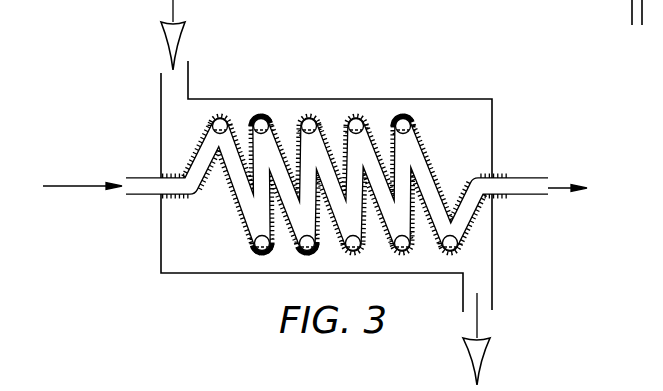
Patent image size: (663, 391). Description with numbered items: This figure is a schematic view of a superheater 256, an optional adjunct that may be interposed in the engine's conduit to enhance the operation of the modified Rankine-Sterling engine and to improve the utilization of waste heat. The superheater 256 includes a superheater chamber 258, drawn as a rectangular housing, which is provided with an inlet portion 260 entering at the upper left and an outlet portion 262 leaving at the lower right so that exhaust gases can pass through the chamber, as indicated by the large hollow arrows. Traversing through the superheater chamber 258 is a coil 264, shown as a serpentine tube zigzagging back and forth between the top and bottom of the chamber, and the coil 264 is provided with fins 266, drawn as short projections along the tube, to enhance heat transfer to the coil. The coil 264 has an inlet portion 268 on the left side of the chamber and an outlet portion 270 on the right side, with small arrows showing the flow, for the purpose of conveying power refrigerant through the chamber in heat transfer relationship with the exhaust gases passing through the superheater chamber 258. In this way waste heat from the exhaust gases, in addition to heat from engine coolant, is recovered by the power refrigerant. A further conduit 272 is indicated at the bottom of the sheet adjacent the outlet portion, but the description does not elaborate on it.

The superheater 256 is at (407, 80).
The superheater chamber 258 is at (467, 99).
The inlet portion 260 is at (190, 83).
The outlet portion 262 is at (493, 273).
The coil 264 is at (268, 133).
The fins 266 is at (354, 115).
The inlet portion 268 is at (143, 175).
The outlet portion 270 is at (522, 177).
The conduit 272 is at (554, 387).